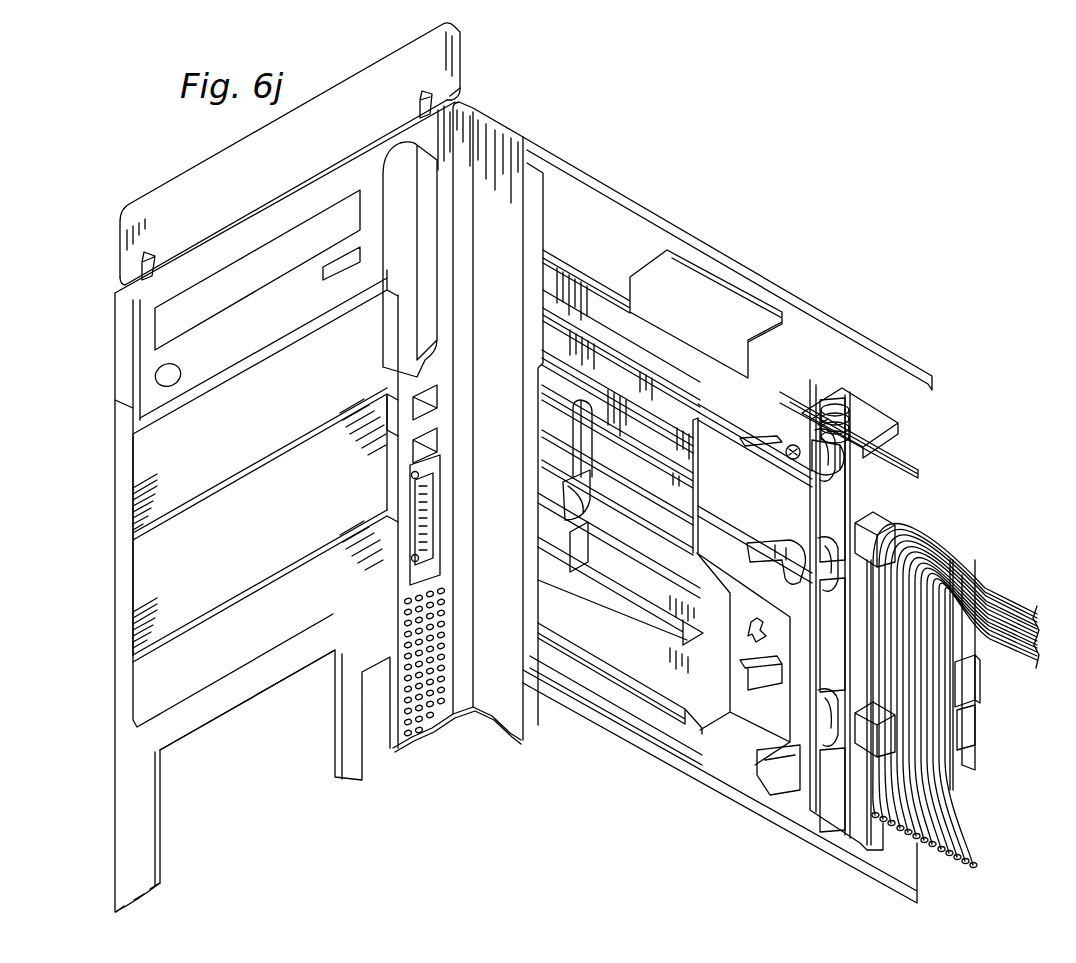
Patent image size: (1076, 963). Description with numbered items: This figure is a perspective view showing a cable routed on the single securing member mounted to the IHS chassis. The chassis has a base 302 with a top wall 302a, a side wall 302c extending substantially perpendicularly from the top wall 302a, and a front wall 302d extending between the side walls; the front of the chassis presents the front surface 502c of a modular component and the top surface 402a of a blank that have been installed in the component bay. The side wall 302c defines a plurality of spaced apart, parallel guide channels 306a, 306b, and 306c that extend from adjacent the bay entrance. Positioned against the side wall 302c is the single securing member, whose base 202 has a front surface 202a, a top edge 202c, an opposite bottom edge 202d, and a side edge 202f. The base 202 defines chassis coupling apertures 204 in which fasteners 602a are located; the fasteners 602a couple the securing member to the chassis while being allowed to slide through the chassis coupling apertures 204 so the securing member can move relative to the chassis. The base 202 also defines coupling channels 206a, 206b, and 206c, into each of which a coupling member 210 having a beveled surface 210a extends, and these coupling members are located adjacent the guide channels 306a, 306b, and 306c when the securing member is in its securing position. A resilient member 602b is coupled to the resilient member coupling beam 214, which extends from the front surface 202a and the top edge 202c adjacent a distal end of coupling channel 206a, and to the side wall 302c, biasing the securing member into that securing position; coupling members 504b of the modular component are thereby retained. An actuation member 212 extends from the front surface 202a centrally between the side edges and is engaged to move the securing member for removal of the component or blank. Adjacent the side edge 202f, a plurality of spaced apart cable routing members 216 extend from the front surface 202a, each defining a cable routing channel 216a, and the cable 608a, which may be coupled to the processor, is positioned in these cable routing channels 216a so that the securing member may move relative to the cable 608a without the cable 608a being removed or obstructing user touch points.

The base 302 is at (504, 121).
The top wall 302a is at (597, 180).
The side wall 302c is at (900, 876).
The front wall 302d is at (238, 687).
The front surface 502c is at (145, 398).
The top surface 402a is at (285, 427).
The guide channel 306a is at (552, 334).
The guide channel 306b is at (557, 450).
The guide channel 306c is at (597, 577).
The base 202 is at (892, 496).
The front surface 202a is at (583, 388).
The top edge 202c is at (920, 452).
The bottom edge 202d is at (587, 680).
The side edge 202f is at (970, 748).
The chassis coupling apertures 204 is at (563, 498).
The coupling channel 206a is at (618, 385).
The coupling channel 206b is at (648, 498).
The coupling channel 206c is at (552, 545).
The coupling member 210 is at (755, 426).
The beveled surface 210a is at (780, 458).
The actuation member 212 is at (843, 602).
The resilient member coupling beam 214 is at (858, 438).
The cable routing members 216 is at (887, 538).
The cable routing channel 216a is at (973, 727).
The coupling member 504b is at (796, 445).
The fasteners 602a is at (820, 635).
The resilient member 602b is at (843, 418).
The cable 608a is at (972, 852).